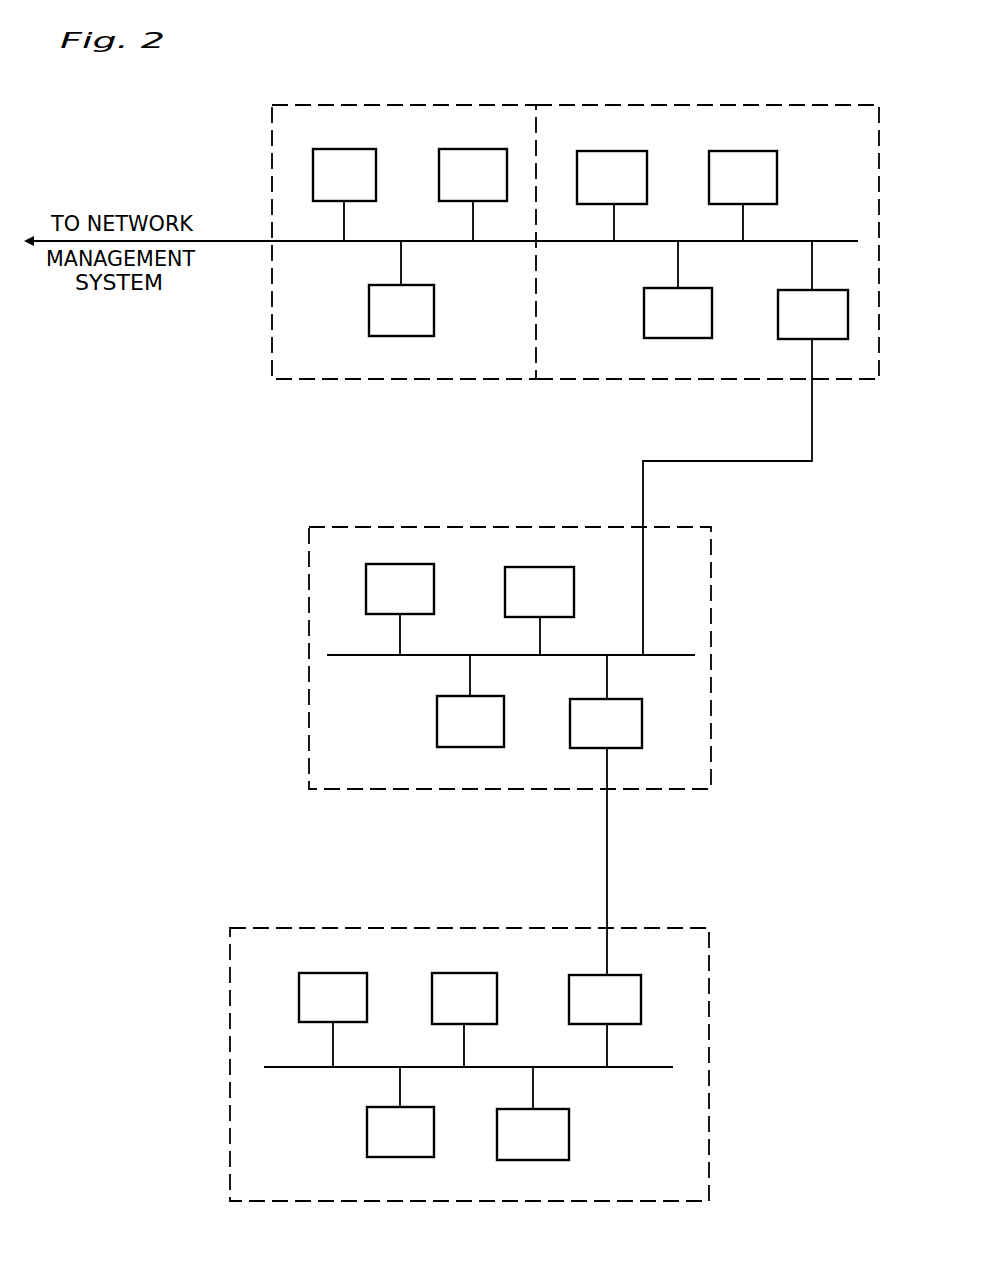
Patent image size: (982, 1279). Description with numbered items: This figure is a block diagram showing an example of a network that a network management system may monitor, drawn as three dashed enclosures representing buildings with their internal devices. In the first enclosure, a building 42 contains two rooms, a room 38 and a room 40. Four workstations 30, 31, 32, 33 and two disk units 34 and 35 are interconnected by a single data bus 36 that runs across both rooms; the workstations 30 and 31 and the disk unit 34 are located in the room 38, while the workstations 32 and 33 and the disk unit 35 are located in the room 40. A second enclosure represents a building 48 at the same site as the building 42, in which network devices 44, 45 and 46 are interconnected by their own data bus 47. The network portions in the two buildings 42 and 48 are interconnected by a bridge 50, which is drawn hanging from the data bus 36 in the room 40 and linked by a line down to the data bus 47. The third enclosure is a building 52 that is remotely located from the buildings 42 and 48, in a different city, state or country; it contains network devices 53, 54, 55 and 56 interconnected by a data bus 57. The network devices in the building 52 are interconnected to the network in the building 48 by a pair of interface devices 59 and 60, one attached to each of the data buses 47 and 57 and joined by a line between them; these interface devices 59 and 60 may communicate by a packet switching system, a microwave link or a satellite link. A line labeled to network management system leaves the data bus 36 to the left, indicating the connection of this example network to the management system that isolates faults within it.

The workstation 30 is at (350, 149).
The workstation 31 is at (474, 149).
The workstation 32 is at (617, 151).
The workstation 33 is at (746, 151).
The disk unit 34 is at (410, 336).
The disk unit 35 is at (690, 338).
The data bus 36 is at (507, 243).
The room 38 is at (394, 105).
The room 40 is at (677, 105).
The building 42 is at (542, 227).
The network device 44 is at (417, 564).
The network device 45 is at (547, 567).
The network device 46 is at (475, 747).
The data bus 47 is at (423, 657).
The building 48 is at (297, 566).
The bridge 50 is at (805, 339).
The building 52 is at (222, 930).
The network device 53 is at (349, 973).
The network device 54 is at (476, 973).
The network device 55 is at (417, 1157).
The network device 56 is at (539, 1160).
The data bus 57 is at (333, 1069).
The interface device 59 is at (600, 975).
The interface device 60 is at (618, 748).